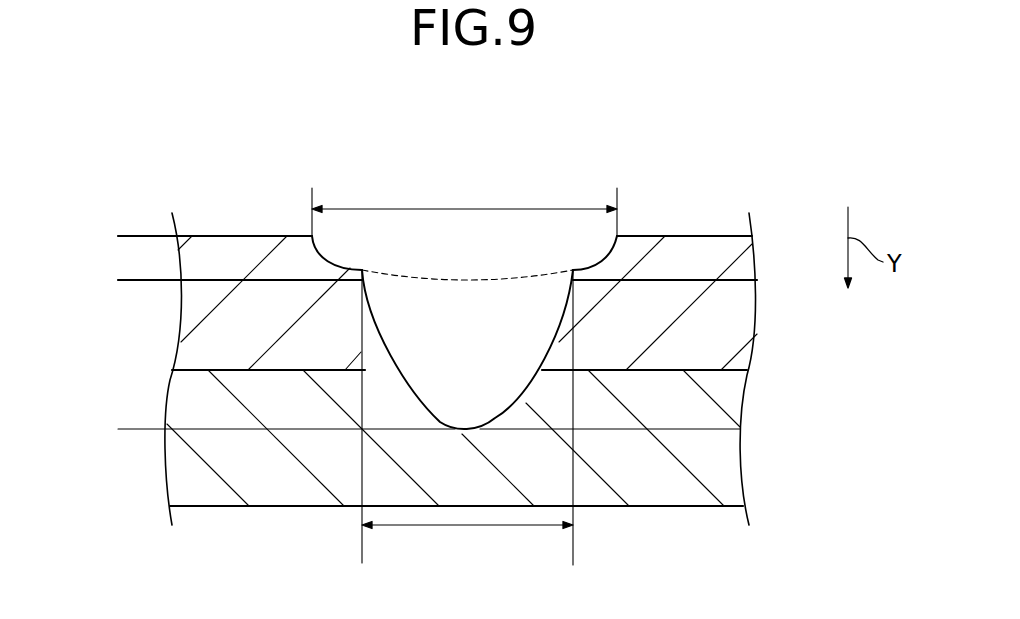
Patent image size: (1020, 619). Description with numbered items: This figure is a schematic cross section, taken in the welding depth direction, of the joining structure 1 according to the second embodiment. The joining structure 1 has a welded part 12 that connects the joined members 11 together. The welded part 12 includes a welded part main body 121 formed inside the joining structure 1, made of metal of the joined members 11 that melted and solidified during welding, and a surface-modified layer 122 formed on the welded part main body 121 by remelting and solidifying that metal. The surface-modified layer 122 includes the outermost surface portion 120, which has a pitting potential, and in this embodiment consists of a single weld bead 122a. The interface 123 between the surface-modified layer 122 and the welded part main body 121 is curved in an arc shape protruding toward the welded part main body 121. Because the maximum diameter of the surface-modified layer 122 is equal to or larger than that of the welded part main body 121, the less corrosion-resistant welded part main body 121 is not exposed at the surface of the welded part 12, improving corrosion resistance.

The joining structure 1 is at (730, 171).
The joined members 11 is at (730, 302).
The welded part 12 is at (559, 357).
The outermost surface portion 120 is at (470, 192).
The welded part main body 121 is at (118, 280).
The surface-modified layer 122 is at (118, 236).
The weld bead 122a is at (583, 245).
The interface 123 is at (521, 284).